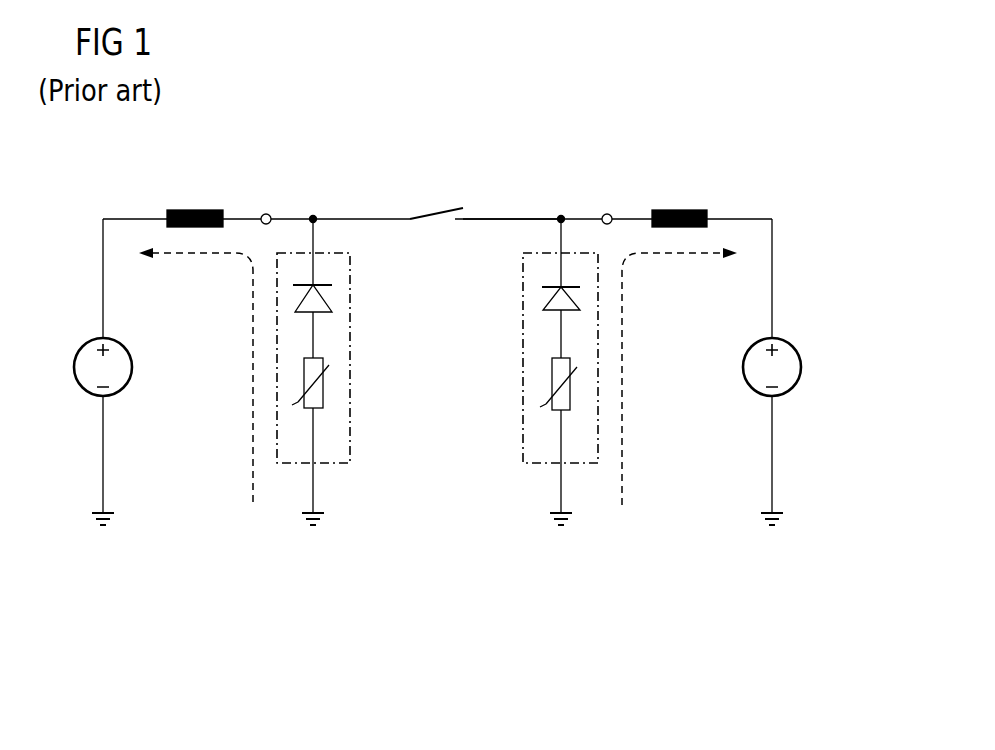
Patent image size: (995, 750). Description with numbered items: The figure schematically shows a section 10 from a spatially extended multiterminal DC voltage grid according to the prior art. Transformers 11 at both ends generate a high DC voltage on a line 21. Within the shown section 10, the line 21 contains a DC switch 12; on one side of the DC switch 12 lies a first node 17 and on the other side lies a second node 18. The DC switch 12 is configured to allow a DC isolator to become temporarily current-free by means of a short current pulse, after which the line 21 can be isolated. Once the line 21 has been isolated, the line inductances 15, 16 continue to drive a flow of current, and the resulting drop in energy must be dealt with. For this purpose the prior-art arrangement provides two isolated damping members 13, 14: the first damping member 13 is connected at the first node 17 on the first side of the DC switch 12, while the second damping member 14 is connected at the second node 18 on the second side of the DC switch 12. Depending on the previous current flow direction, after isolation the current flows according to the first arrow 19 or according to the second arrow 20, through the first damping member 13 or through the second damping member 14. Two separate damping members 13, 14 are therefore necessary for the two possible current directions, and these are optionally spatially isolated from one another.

The section 10 is at (620, 154).
The transformer 11 is at (88, 343).
The DC switch 12 is at (433, 212).
The first damping member 13 is at (523, 346).
The second damping member 14 is at (350, 346).
The line inductance 15 is at (680, 210).
The line inductance 16 is at (193, 210).
The first node 17 is at (562, 215).
The second node 18 is at (313, 215).
The first arrow 19 is at (622, 344).
The second arrow 20 is at (253, 334).
The line 21 is at (510, 218).